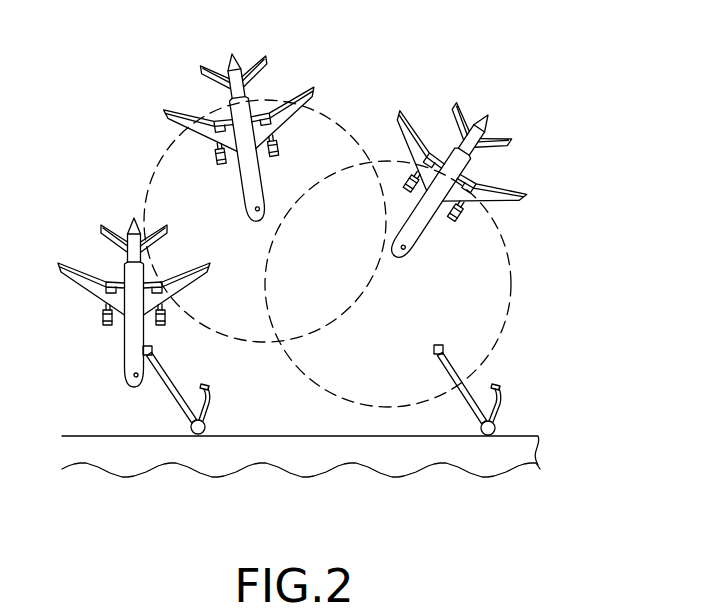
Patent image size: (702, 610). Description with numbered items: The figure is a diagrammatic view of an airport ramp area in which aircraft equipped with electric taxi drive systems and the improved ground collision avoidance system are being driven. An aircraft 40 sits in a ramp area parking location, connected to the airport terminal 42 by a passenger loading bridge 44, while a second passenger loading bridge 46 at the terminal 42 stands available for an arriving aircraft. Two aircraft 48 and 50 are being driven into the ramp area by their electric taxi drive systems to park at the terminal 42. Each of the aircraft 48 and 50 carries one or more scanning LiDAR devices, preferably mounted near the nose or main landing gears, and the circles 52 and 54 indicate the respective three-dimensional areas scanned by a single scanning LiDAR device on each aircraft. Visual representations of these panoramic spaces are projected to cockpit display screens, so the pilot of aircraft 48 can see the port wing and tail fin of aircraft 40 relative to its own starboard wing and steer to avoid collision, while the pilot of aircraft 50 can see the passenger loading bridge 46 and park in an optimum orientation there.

The aircraft 40 is at (99, 351).
The airport terminal 42 is at (262, 458).
The passenger loading bridge 44 is at (176, 402).
The passenger loading bridge 46 is at (465, 402).
The aircraft 48 is at (165, 76).
The aircraft 50 is at (514, 114).
The circle 52 is at (158, 158).
The circle 54 is at (512, 272).